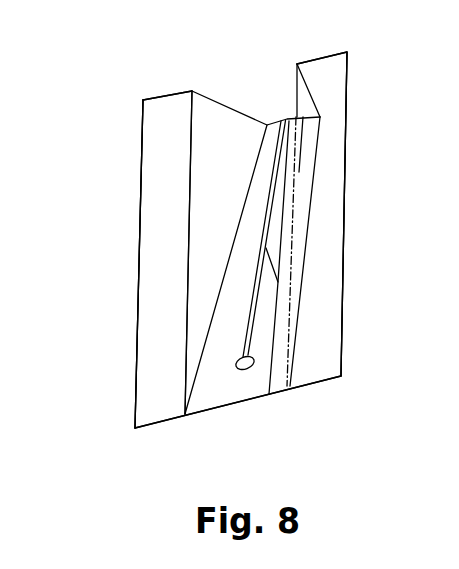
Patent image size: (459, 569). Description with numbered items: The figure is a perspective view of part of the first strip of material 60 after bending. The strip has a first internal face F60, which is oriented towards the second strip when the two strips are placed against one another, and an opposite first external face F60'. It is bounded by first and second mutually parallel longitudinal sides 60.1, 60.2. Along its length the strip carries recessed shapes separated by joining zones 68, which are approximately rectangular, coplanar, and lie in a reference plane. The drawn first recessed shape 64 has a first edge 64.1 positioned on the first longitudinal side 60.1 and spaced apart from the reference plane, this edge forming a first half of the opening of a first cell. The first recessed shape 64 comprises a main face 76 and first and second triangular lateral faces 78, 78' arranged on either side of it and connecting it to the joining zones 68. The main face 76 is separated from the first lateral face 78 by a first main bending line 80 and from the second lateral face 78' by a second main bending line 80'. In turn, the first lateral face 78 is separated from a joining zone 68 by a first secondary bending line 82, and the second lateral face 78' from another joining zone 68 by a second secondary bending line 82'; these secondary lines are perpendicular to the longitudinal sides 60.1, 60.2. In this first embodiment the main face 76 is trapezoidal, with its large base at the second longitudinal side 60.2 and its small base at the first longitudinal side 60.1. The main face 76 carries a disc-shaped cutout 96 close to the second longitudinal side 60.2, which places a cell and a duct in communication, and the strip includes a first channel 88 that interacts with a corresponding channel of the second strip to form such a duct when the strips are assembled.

The first strip of material 60 is at (198, 240).
The first longitudinal side 60.1 is at (325, 57).
The second longitudinal side 60.2 is at (308, 387).
The first internal face F60 is at (125, 86).
The first external face F60' is at (100, 264).
The first secondary bending line 82 is at (168, 231).
The second secondary bending line 82' is at (291, 63).
The first recessed shape 64 is at (256, 73).
The first edge 64.1 is at (311, 96).
The first triangular lateral face 78 is at (177, 269).
The second triangular lateral face 78' is at (352, 251).
The first main bending line 80 is at (150, 252).
The second main bending line 80' is at (344, 251).
The main face 76 is at (233, 322).
The cutout 96 is at (244, 369).
The first channel 88 is at (269, 394).
The joining zone 68 is at (236, 240).